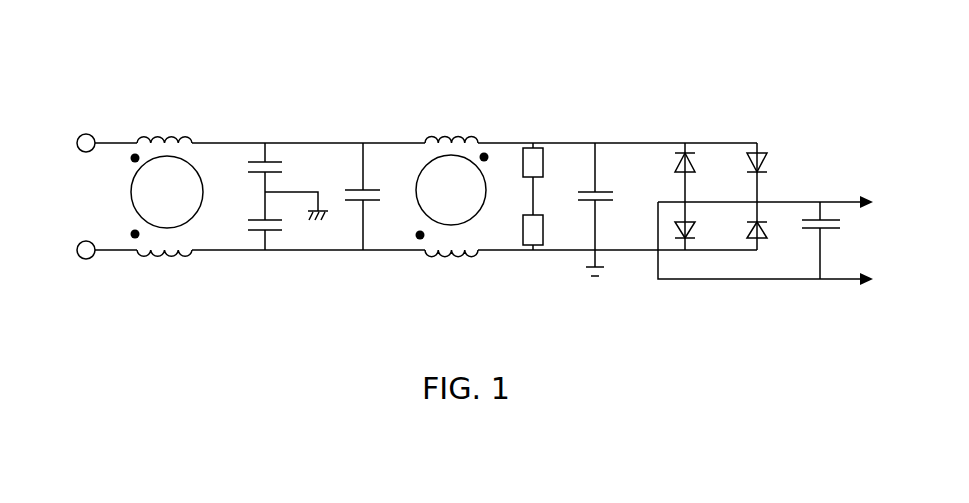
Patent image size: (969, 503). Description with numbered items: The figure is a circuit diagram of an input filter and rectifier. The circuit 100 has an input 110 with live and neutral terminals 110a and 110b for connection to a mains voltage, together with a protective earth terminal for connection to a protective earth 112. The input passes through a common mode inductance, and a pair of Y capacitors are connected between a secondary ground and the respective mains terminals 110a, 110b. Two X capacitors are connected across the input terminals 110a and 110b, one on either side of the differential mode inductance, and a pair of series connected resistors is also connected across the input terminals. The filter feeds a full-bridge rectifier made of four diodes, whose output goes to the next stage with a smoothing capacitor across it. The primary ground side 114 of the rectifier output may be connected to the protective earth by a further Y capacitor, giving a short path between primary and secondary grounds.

The circuit 100 is at (636, 72).
The live terminal 110a is at (84, 133).
The neutral terminal 110b is at (84, 260).
The input 110 is at (82, 178).
The protective earth 112 is at (317, 222).
The primary ground side 114 is at (583, 274).